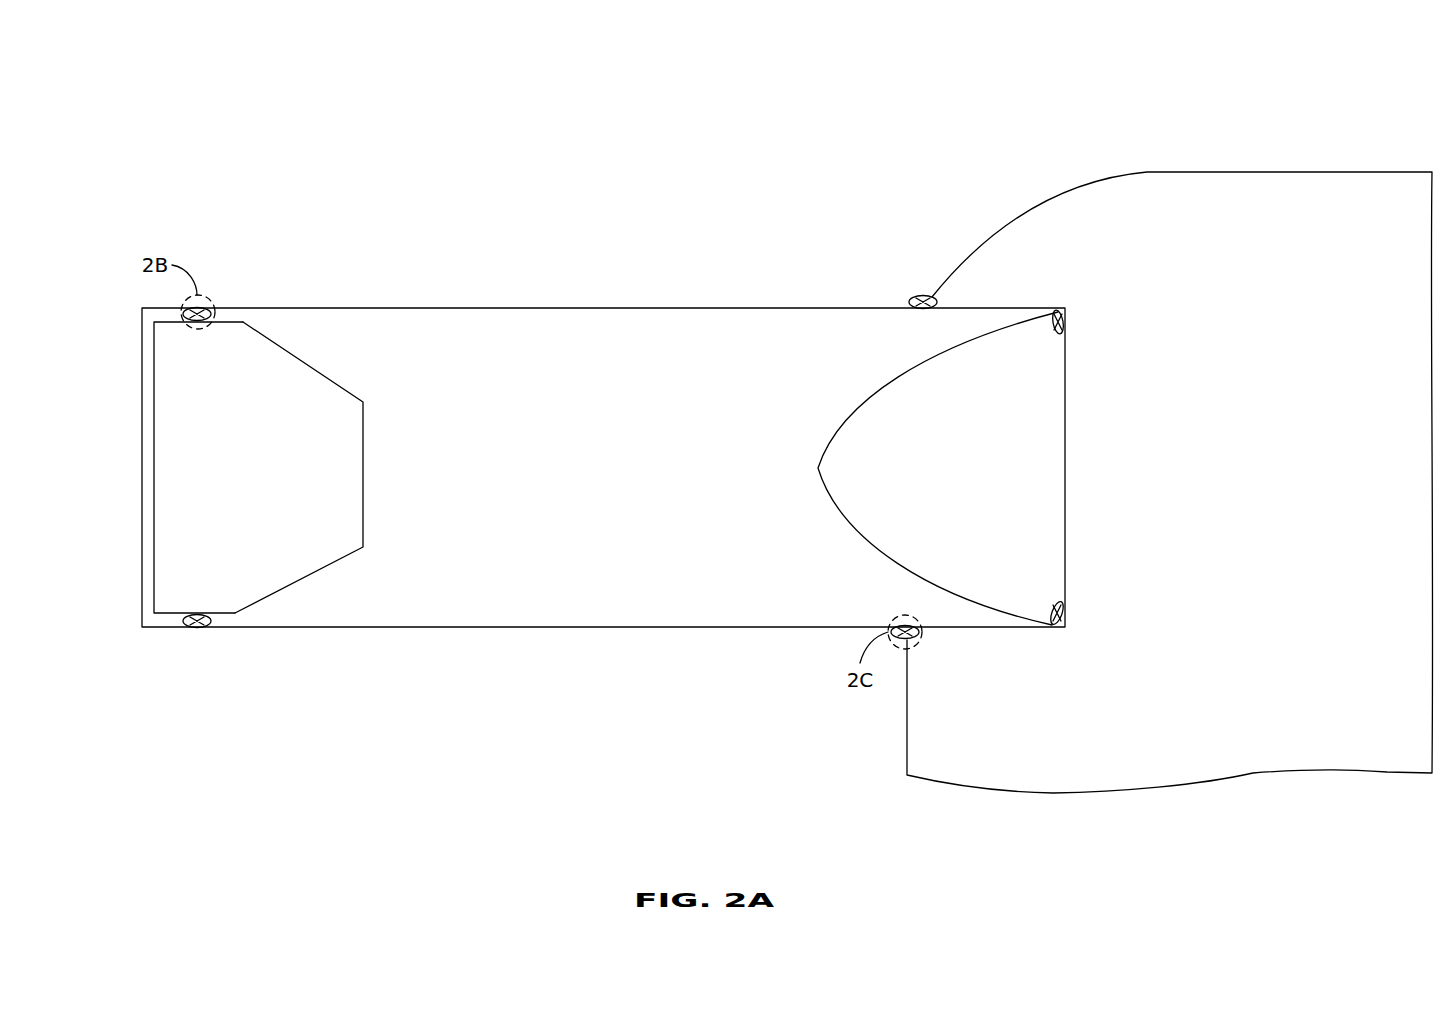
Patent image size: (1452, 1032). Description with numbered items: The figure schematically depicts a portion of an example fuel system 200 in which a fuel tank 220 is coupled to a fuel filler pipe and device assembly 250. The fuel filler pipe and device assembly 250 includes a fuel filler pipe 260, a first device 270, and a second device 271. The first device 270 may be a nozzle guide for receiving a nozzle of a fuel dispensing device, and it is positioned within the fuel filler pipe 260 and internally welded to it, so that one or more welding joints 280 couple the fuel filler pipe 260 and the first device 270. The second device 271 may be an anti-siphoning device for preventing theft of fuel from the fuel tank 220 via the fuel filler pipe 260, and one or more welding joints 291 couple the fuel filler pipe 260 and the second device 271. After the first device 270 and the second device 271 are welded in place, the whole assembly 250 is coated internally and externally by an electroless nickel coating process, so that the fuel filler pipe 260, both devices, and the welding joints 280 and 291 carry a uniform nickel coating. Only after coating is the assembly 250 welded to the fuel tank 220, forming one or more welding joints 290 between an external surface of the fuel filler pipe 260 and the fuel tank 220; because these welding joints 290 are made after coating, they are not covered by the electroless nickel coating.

The fuel system 200 is at (1301, 126).
The fuel tank 220 is at (1215, 170).
The fuel filler pipe and device assembly 250 is at (175, 203).
The fuel filler pipe 260 is at (767, 307).
The first device 270 is at (312, 368).
The second device 271 is at (972, 342).
The welding joints 280 is at (213, 308).
The welding joints 290 is at (920, 297).
The welding joints 291 is at (1053, 323).